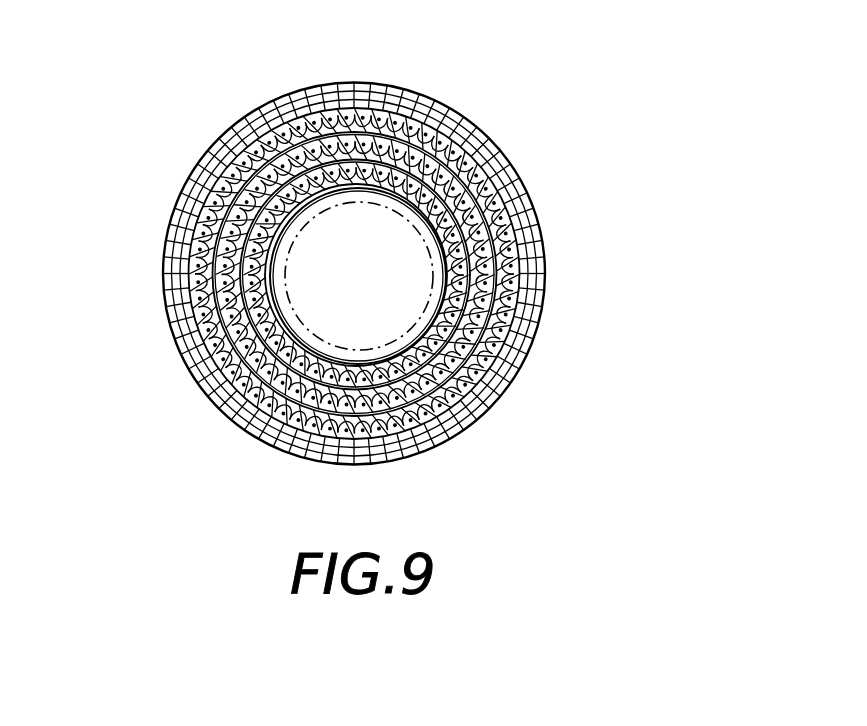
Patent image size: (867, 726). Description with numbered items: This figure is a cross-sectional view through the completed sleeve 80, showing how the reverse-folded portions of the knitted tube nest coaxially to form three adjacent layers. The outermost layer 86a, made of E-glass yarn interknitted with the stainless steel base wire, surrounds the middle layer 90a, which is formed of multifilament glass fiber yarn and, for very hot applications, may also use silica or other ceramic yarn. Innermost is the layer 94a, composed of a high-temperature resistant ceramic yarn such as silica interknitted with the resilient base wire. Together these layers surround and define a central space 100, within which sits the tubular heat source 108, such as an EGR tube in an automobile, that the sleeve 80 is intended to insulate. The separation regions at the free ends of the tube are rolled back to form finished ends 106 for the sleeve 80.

The sleeve 80 is at (538, 157).
The outermost layer 86a is at (466, 373).
The middle layer 90a is at (480, 287).
The innermost layer 94a is at (456, 249).
The central space 100 is at (383, 253).
The finished ends 106 is at (406, 445).
The tubular heat source 108 is at (410, 308).